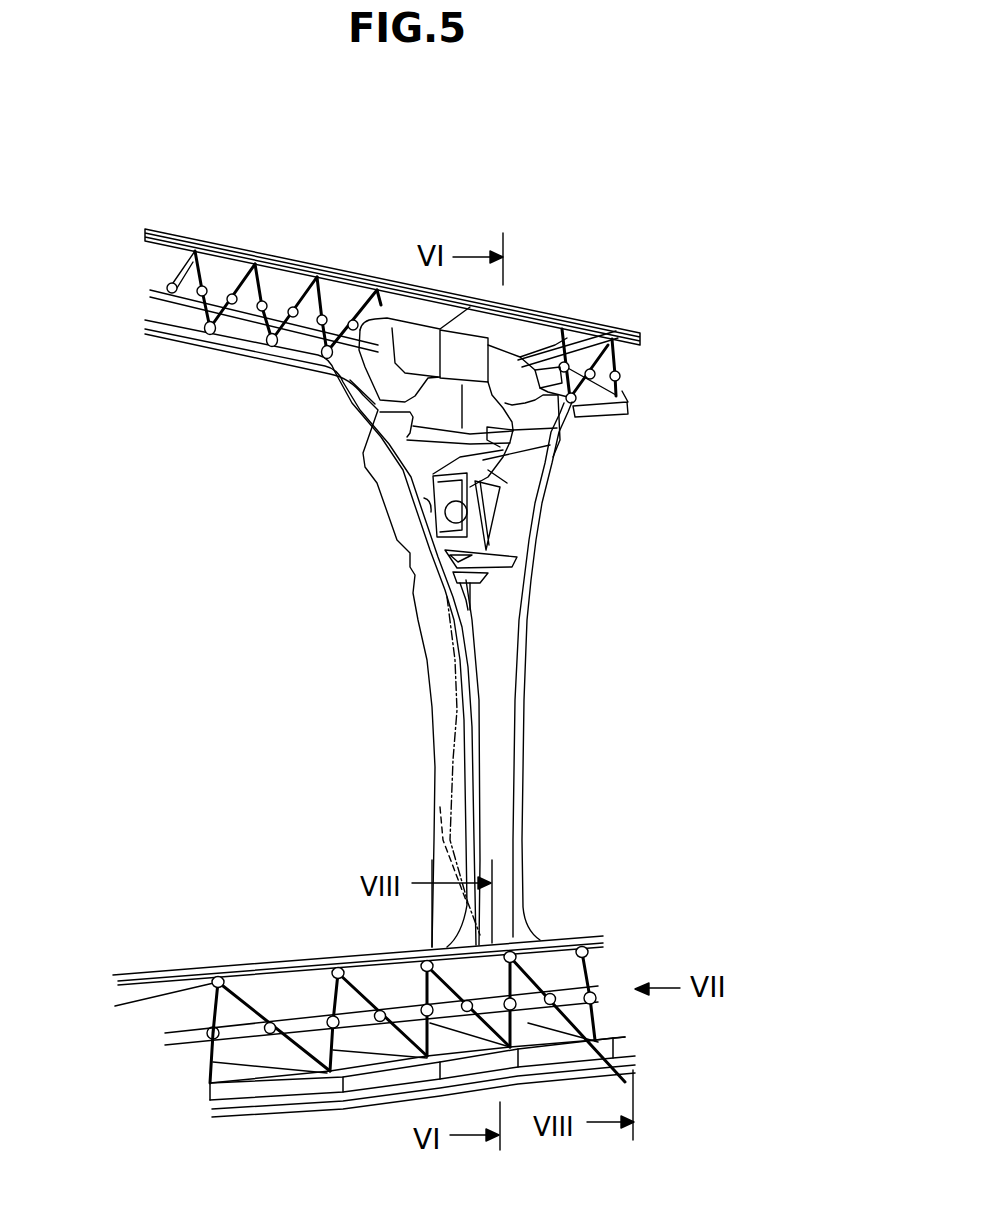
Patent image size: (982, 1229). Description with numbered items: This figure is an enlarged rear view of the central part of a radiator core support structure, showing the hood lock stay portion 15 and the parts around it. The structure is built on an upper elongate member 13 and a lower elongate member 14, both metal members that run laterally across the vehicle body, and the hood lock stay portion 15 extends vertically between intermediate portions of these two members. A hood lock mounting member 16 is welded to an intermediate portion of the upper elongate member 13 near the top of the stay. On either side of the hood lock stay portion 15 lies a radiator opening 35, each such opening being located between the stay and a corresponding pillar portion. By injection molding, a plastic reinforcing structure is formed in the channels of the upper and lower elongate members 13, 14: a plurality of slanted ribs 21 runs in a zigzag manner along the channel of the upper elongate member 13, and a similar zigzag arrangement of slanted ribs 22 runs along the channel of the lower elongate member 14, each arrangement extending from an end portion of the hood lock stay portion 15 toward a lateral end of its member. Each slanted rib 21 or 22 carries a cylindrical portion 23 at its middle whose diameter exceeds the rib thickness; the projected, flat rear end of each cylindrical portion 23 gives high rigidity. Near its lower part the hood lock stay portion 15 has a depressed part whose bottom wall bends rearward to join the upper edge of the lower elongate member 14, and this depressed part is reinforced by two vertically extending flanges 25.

The radiator core support upper member 13 is at (309, 257).
The radiator core support lower member 14 is at (187, 967).
The hood lock stay portion 15 is at (419, 684).
The hood lock mounting member 16 is at (508, 474).
The slanted rib 21 is at (168, 282).
The slanted rib 22 is at (210, 1080).
The cylindrical portion 23 is at (197, 294).
The flange 25 is at (431, 928).
The radiator opening 35 is at (232, 626).